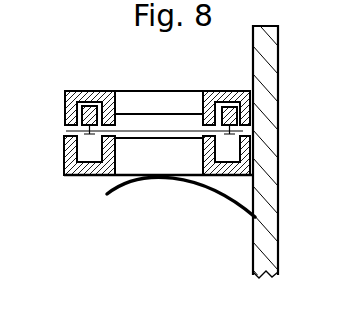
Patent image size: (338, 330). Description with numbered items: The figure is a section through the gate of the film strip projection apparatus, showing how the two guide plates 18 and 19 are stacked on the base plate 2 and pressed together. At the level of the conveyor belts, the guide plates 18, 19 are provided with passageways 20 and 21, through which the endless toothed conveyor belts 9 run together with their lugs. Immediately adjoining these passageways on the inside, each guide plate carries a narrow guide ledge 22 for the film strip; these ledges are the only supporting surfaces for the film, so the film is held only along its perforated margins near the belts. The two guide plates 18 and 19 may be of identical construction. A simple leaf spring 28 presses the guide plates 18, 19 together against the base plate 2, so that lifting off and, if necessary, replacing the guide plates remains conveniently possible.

The base plate 2 is at (267, 240).
The conveyor belt 9 is at (82, 113).
The guide plate 18 is at (66, 173).
The guide plate 19 is at (163, 97).
The passageway 20 is at (88, 103).
The passageway 21 is at (82, 172).
The guide ledge 22 is at (107, 100).
The leaf spring 28 is at (133, 186).